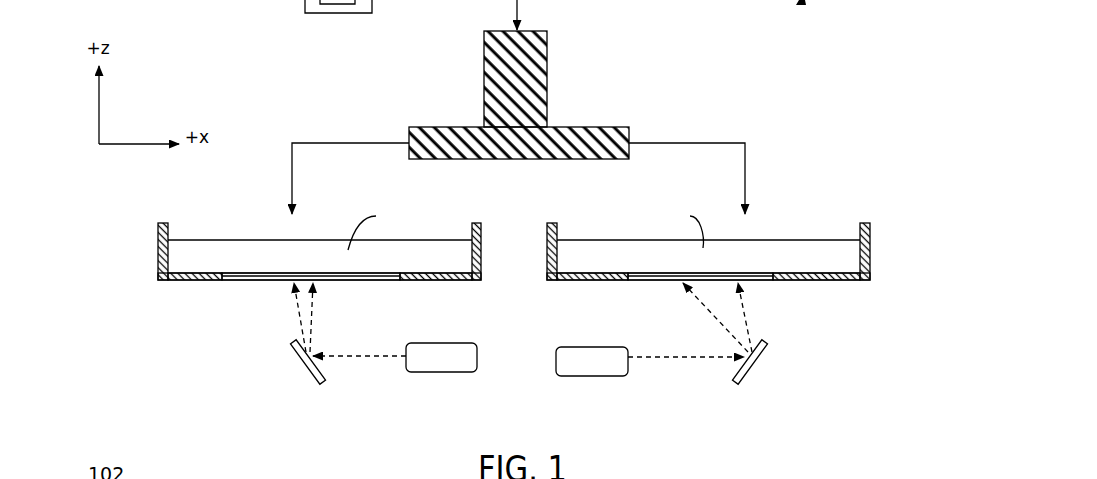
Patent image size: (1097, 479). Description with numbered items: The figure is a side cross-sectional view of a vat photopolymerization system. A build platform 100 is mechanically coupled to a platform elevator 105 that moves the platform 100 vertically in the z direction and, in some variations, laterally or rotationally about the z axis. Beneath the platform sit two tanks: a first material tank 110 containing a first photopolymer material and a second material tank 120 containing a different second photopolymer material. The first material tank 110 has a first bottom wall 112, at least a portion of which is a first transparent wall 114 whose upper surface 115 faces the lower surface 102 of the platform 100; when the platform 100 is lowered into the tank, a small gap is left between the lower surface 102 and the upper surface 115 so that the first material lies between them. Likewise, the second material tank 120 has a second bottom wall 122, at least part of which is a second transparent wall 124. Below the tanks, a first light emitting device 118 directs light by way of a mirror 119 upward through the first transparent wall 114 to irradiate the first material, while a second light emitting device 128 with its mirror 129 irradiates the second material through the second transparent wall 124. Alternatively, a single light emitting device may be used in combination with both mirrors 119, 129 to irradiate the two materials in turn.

The build platform 100 is at (518, 114).
The lower surface 102 is at (540, 160).
The platform elevator 105 is at (547, 53).
The first material tank 110 is at (280, 271).
The first bottom wall 112 is at (185, 282).
The first transparent wall 114 is at (258, 282).
The upper surface 115 is at (290, 272).
The first light emitting device 118 is at (451, 376).
The mirror 119 is at (310, 370).
The second material tank 120 is at (740, 270).
The second bottom wall 122 is at (845, 281).
The second transparent wall 124 is at (762, 282).
The second light emitting device 128 is at (580, 379).
The mirror 129 is at (745, 370).